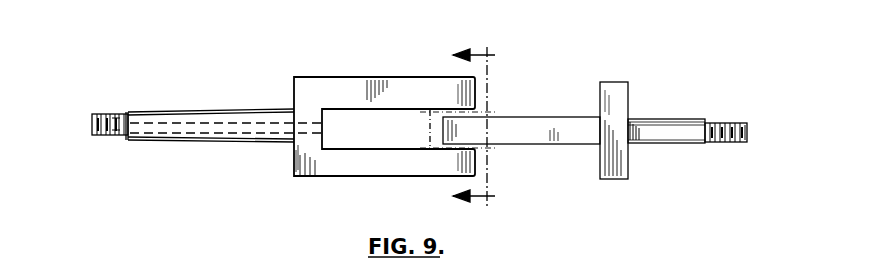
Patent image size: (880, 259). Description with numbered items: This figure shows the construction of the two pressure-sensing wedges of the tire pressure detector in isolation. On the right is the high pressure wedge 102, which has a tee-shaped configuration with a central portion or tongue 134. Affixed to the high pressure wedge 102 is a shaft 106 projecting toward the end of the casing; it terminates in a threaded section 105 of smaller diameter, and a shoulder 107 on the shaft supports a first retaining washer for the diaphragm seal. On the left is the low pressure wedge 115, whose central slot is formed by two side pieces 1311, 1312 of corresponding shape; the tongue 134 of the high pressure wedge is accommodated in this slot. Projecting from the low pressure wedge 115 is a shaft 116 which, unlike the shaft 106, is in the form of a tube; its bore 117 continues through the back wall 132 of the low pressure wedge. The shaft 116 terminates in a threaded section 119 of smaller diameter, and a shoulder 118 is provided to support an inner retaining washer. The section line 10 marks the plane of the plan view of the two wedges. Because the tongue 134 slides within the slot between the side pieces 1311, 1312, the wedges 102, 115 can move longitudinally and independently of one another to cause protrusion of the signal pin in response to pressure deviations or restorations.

The high pressure wedge 102 is at (613, 179).
The threaded section 105 is at (737, 123).
The shaft 106 is at (665, 141).
The shoulder 107 is at (707, 142).
The low pressure wedge 115 is at (357, 165).
The shaft 116 is at (178, 141).
The bore 117 is at (92, 126).
The shoulder 118 is at (126, 111).
The threaded section 119 is at (112, 135).
The side piece 1311 is at (356, 95).
The side piece 1312 is at (378, 165).
The back wall 132 is at (304, 150).
The tongue 134 is at (562, 125).
The section line 10- 10 is at (459, 126).